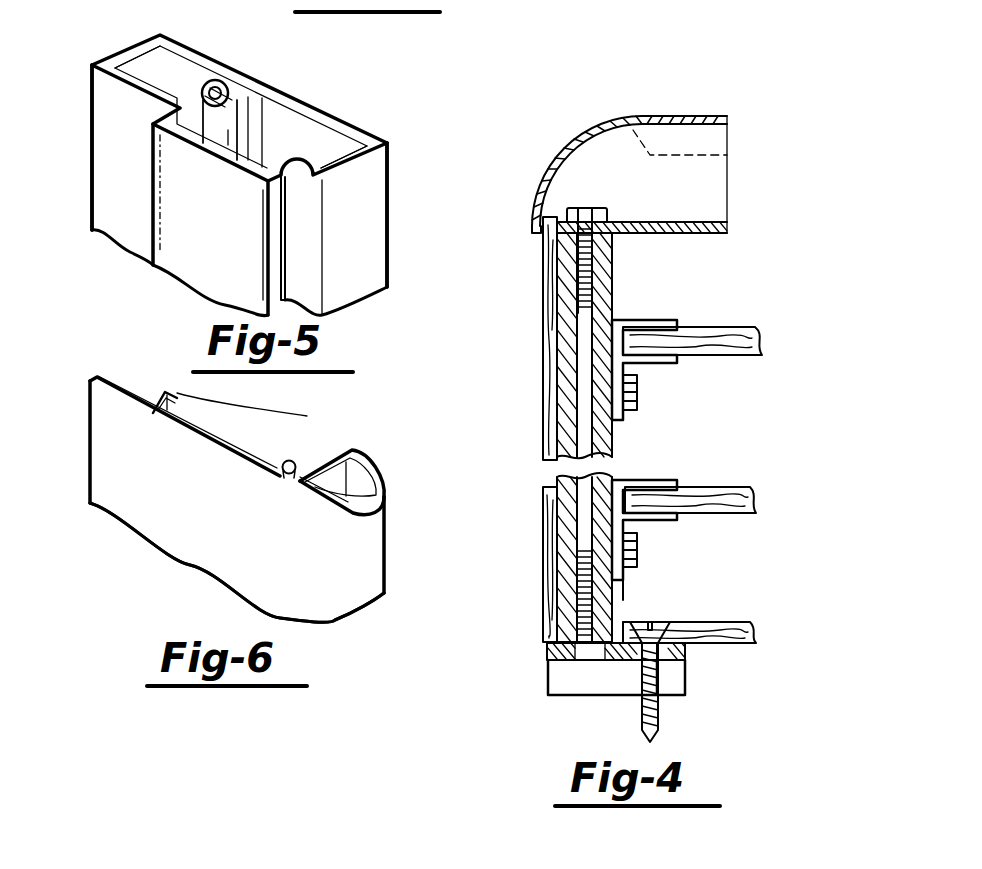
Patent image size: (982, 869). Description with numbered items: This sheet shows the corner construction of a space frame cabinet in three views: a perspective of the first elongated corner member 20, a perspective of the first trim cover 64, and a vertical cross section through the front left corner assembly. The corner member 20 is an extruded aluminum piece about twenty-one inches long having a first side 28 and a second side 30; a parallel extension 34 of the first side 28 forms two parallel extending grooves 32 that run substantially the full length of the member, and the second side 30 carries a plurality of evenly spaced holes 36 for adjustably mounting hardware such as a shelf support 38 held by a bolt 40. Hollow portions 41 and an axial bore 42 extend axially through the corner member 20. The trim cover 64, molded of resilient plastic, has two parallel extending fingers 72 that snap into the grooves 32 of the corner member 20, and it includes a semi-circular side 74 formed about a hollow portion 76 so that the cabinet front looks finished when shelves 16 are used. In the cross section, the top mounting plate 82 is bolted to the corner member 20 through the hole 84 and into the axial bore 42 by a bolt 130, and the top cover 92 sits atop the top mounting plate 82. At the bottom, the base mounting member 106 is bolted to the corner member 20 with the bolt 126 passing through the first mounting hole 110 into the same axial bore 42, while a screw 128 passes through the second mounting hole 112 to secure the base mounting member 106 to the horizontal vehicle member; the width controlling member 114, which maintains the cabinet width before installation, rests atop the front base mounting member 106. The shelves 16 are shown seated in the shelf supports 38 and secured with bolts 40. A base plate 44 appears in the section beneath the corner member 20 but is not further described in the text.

In FIG. 4, the shelves 16 is at (747, 490).
In FIG. 5, the first elongated corner member 20 is at (386, 93).
In FIG. 4, the first elongated corner member 20 is at (603, 277).
In FIG. 5, the first side 28 is at (107, 130).
In FIG. 5, the second side 30 is at (390, 197).
In FIG. 5, the grooves 32 is at (290, 180).
In FIG. 5, the parallel extension 34 is at (180, 270).
In FIG. 5, the holes 36 is at (207, 62).
In FIG. 4, the shelf support 38 is at (670, 480).
In FIG. 4, the bolt 40 is at (637, 397).
In FIG. 5, the hollow portions 41 is at (148, 72).
In FIG. 5, the axial bore 42 is at (215, 103).
In FIG. 4, the axial bore 42 is at (587, 323).
In FIG. 4, the base plate 44 is at (548, 643).
In FIG. 6, the first trim cover 64 is at (367, 421).
In FIG. 4, the first trim cover 64 is at (546, 332).
In FIG. 6, the parallel extending fingers 72 is at (290, 459).
In FIG. 6, the semi-circular side 74 is at (365, 546).
In FIG. 6, the hollow portion 76 is at (363, 463).
In FIG. 4, the top mounting plate 82 is at (730, 231).
In FIG. 4, the hole 84 is at (603, 227).
In FIG. 4, the top cover 92 is at (590, 130).
In FIG. 4, the base mounting member 106 is at (685, 680).
In FIG. 4, the first mounting hole 110 is at (547, 660).
In FIG. 4, the second mounting hole 112 is at (687, 622).
In FIG. 4, the width controlling member 114 is at (740, 622).
In FIG. 4, the bolt 126 is at (617, 610).
In FIG. 4, the screw 128 is at (657, 727).
In FIG. 4, the bolt 130 is at (590, 213).